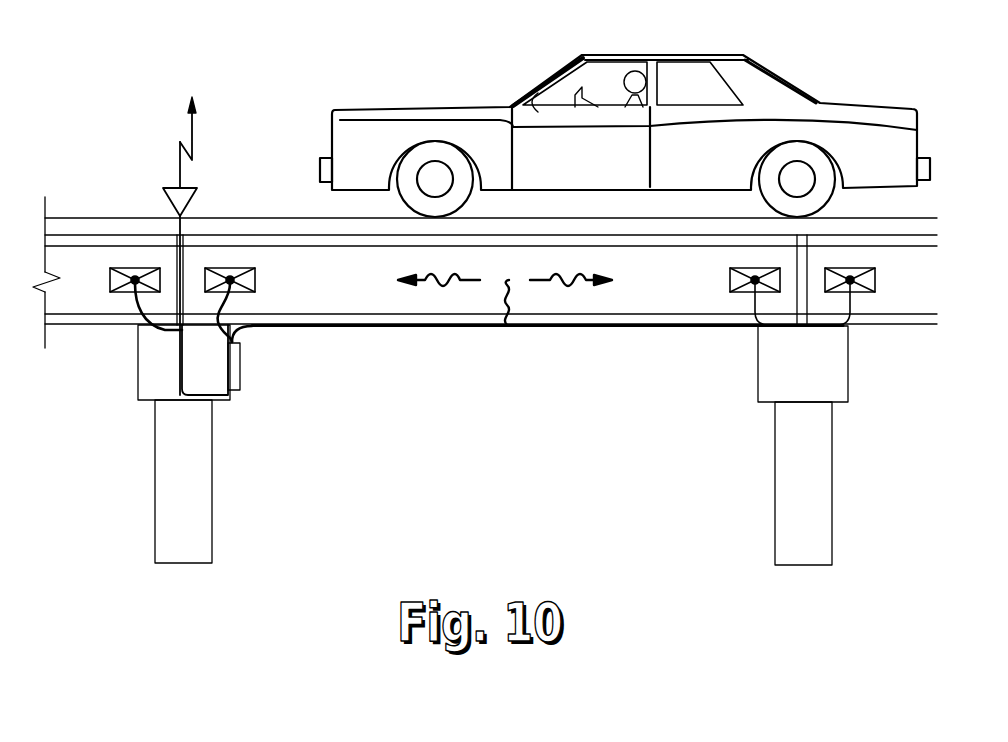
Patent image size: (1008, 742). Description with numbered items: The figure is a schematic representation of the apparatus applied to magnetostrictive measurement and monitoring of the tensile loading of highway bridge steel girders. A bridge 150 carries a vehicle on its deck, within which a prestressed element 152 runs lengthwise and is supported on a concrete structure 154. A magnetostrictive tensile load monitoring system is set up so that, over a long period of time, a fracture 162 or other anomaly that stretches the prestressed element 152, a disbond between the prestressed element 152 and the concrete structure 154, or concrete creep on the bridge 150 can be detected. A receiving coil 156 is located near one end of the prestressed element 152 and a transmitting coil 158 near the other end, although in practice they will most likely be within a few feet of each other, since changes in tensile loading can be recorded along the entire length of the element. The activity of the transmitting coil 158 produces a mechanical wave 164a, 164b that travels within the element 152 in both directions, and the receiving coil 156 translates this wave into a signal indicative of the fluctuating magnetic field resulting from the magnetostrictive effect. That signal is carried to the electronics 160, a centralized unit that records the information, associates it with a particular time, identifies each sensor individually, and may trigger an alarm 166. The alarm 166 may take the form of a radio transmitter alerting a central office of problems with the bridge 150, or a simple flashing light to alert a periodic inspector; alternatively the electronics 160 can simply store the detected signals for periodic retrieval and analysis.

The bridge 150 is at (599, 438).
The prestressed element 152 is at (662, 297).
The concrete structure 154 is at (197, 495).
The receiving coil 156 is at (257, 277).
The transmitting coil 158 is at (135, 302).
The electronics 160 is at (256, 378).
The fracture 162 is at (503, 297).
The mechanical wave 164a is at (430, 283).
The mechanical wave 164b is at (575, 283).
The alarm 166 is at (170, 207).